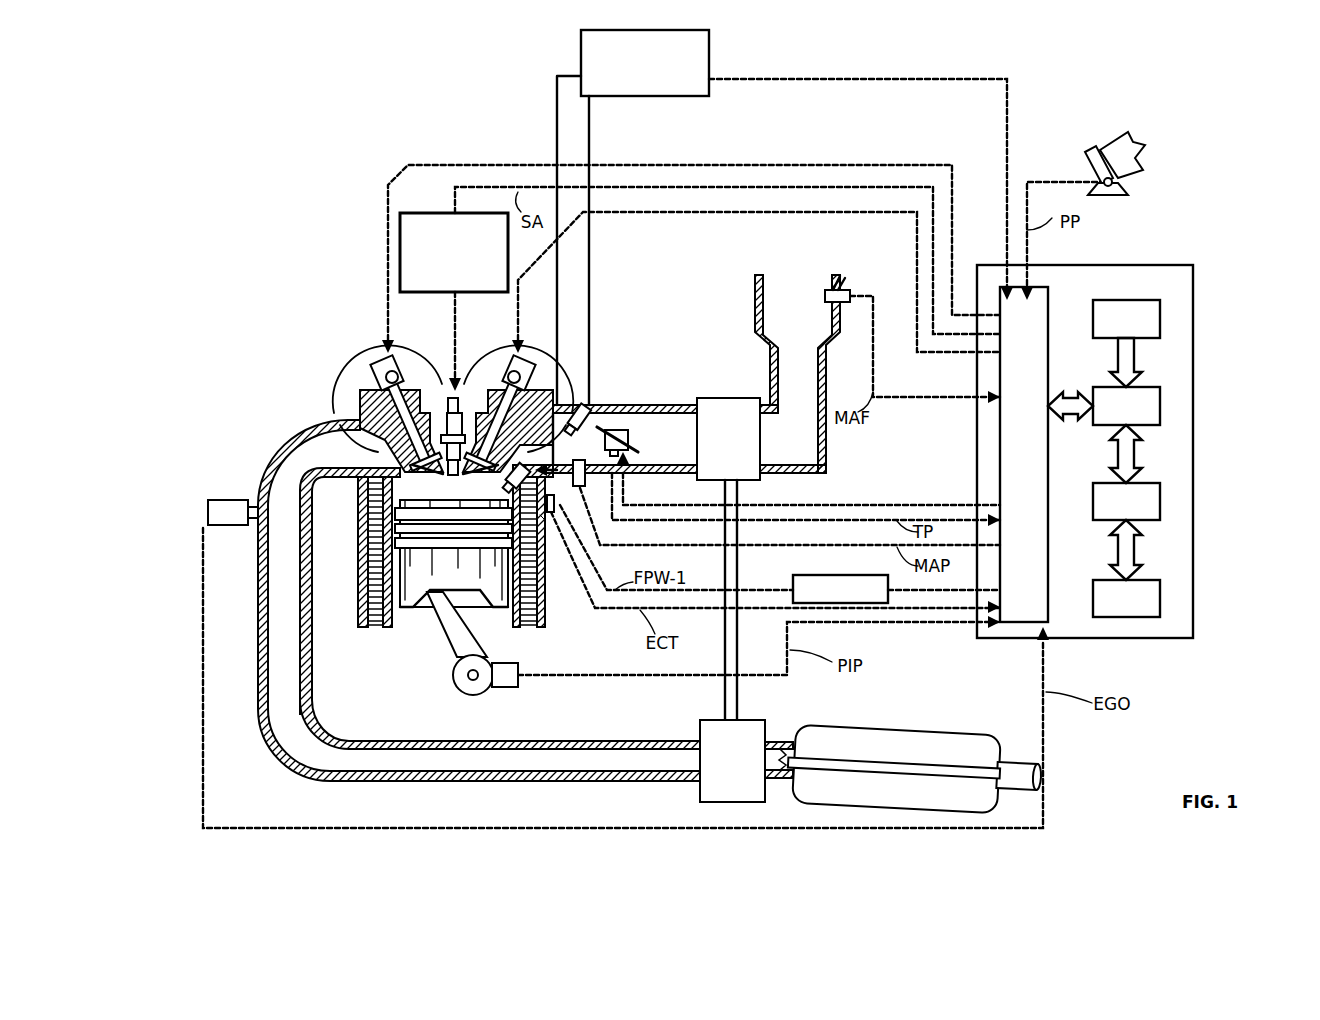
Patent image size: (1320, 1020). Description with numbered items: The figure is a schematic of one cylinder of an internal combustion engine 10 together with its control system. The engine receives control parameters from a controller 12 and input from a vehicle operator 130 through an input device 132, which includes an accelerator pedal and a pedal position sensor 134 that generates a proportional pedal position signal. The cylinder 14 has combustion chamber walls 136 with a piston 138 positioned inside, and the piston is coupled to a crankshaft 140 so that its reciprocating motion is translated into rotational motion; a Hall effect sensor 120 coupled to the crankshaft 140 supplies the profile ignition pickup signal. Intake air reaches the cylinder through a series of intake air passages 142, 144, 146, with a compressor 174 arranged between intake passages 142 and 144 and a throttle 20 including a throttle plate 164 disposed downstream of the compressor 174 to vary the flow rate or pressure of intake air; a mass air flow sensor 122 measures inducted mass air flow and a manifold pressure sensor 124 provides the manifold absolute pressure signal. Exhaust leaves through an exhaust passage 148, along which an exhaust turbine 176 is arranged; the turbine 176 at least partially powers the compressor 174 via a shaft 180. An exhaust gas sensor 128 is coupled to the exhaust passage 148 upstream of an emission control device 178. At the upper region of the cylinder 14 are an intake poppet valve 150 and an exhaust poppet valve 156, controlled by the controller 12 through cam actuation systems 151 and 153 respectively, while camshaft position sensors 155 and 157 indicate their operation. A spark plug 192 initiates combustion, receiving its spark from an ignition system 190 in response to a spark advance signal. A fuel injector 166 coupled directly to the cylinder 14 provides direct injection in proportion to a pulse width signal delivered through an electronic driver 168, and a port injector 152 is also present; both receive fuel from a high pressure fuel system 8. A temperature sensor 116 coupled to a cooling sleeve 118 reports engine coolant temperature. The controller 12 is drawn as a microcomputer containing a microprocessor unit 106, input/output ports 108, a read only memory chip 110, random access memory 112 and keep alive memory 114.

The internal combustion engine 10 is at (192, 102).
The high pressure fuel system 8 is at (712, 40).
The ignition system 190 is at (418, 213).
The vehicle operator 130 is at (1140, 150).
The input device 132 is at (1092, 162).
The pedal position sensor 134 is at (1118, 183).
The controller 12 is at (1190, 266).
The input/output ports 108 is at (1052, 296).
The read only memory chip 110 is at (1163, 320).
The microprocessor unit 106 is at (1163, 407).
The random access memory 112 is at (1163, 504).
The keep alive memory 114 is at (1163, 602).
The mass air flow sensor 122 is at (851, 284).
The intake air passage 142 is at (797, 374).
The compressor 174 is at (705, 398).
The intake air passage 146 is at (625, 425).
The intake air passage 144 is at (621, 449).
The throttle plate 164 is at (612, 430).
The throttle 20 is at (623, 430).
The port injector 152 is at (577, 406).
The manifold pressure sensor 124 is at (585, 492).
The exhaust passage 148 is at (479, 600).
The cylinder 14 is at (357, 506).
The exhaust gas sensor 128 is at (208, 506).
The combustion chamber walls 136 is at (380, 630).
The piston 138 is at (436, 600).
The crankshaft 140 is at (465, 693).
The Hall effect sensor 120 is at (502, 690).
The exhaust poppet valve 156 is at (376, 420).
The intake poppet valve 150 is at (478, 440).
The camshaft position sensor 157 is at (378, 372).
The camshaft position sensor 155 is at (546, 382).
The cam actuation system 153 is at (398, 364).
The cam actuation system 151 is at (508, 364).
The spark plug 192 is at (452, 388).
The fuel injector 166 is at (515, 474).
The temperature sensor 116 is at (560, 515).
The cooling sleeve 118 is at (549, 515).
The electronic driver 168 is at (797, 578).
The shaft 180 is at (740, 689).
The exhaust turbine 176 is at (706, 790).
The emission control device 178 is at (960, 736).